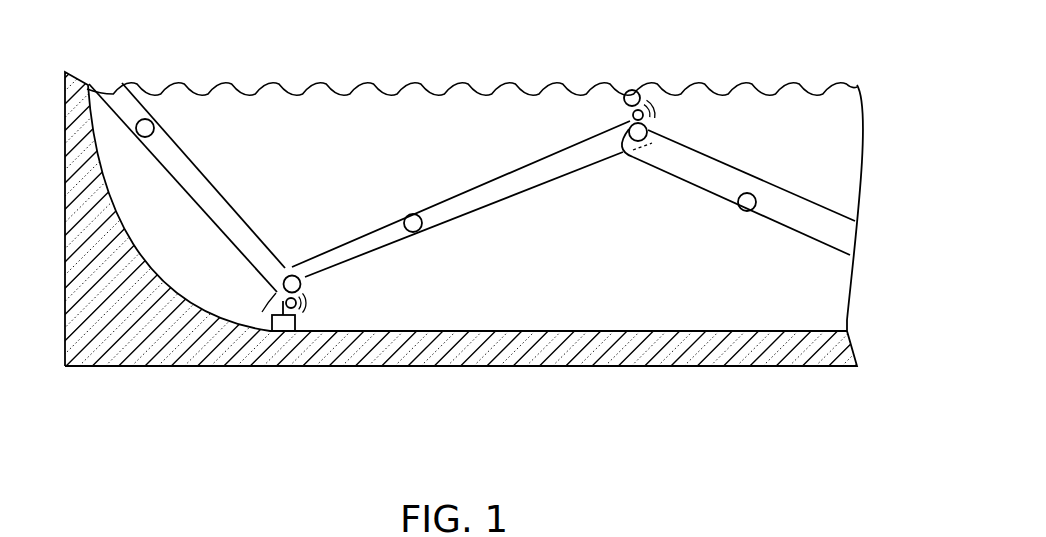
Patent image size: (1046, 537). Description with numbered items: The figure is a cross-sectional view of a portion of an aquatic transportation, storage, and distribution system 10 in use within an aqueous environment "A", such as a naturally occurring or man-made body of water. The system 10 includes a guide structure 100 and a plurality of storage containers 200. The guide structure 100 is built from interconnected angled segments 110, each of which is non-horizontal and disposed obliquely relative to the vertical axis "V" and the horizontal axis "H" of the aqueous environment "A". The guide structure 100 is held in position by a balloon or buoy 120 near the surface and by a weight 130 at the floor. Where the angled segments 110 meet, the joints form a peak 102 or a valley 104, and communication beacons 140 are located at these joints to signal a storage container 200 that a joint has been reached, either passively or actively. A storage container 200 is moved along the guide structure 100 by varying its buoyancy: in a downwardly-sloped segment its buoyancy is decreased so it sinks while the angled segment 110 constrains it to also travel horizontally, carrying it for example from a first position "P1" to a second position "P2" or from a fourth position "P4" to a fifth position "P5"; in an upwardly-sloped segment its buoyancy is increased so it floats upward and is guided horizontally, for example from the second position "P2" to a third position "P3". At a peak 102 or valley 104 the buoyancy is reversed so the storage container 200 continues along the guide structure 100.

The aquatic transportation, storage, and distribution system 10 is at (466, 116).
The guide structure 100 is at (499, 222).
The peak 102 is at (655, 134).
The valley 104 is at (273, 300).
The angled segment 110 is at (221, 197).
The balloon 120 is at (634, 91).
The weight 130 is at (284, 331).
The communication beacon 140 is at (298, 298).
The storage container 200 is at (156, 127).
The first position P1 is at (150, 120).
The second position P2 is at (297, 276).
The third position P3 is at (415, 213).
The fourth position P4 is at (633, 158).
The fifth position P5 is at (758, 202).
The aqueous environment A is at (403, 308).
The vertical axis V is at (654, 295).
The horizontal axis H is at (685, 263).